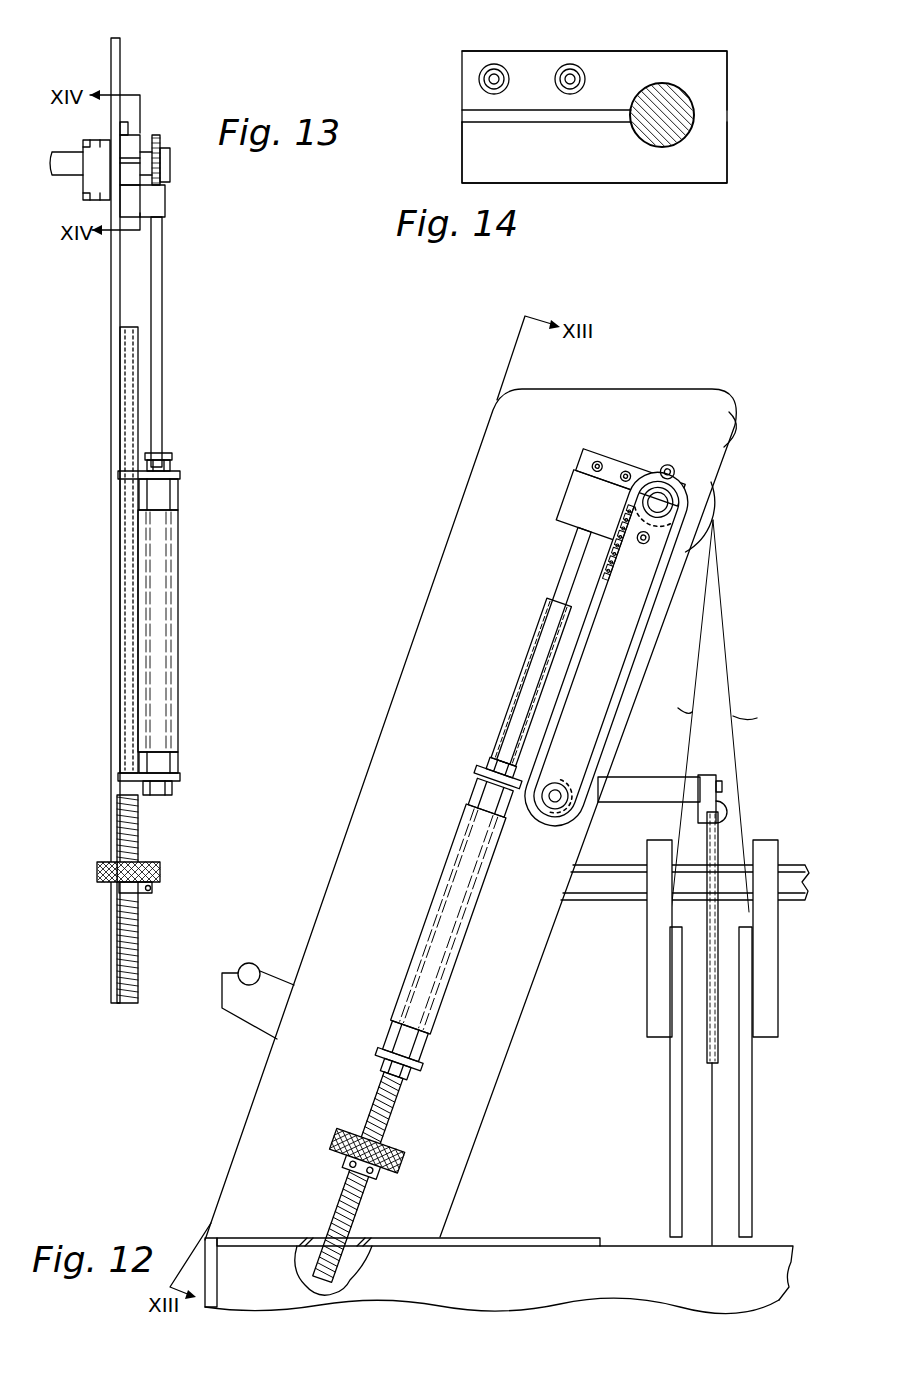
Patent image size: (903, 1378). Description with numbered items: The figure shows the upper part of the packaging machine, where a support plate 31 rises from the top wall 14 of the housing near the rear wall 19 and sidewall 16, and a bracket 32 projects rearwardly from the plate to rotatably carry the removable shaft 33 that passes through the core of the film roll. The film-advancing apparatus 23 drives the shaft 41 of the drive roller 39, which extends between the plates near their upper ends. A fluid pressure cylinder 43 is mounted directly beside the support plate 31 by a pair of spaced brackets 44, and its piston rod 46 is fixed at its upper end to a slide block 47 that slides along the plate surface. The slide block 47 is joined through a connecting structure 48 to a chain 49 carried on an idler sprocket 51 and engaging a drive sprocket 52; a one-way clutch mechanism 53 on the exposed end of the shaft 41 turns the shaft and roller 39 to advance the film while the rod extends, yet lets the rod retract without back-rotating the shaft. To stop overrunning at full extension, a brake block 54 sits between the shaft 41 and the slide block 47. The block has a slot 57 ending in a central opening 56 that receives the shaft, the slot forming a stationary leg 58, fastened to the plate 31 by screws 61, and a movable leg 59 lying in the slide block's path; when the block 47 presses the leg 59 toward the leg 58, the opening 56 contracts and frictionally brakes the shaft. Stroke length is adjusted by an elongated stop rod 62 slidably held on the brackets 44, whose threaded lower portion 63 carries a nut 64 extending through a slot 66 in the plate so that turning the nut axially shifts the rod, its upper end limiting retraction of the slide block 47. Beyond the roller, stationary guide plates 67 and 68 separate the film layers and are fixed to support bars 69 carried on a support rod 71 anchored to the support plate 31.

In FIG. 12, the top wall 14 is at (553, 1238).
In FIG. 12, the sidewall 16 is at (770, 1268).
In FIG. 12, the rear wall 19 is at (210, 1262).
In FIG. 13, the film-advancing apparatus 23 is at (180, 459).
In FIG. 13, the support plate 31 is at (116, 292).
In FIG. 12, the support plate 31 is at (480, 545).
In FIG. 12, the bracket 32 is at (263, 1020).
In FIG. 12, the removable shaft 33 is at (256, 966).
In FIG. 12, the drive roller 39 is at (710, 513).
In FIG. 13, the drive shaft 41 is at (65, 160).
In FIG. 14, the drive shaft 41 is at (688, 115).
In FIG. 12, the drive shaft 41 is at (662, 503).
In FIG. 13, the fluid pressure cylinder 43 is at (158, 627).
In FIG. 12, the fluid pressure cylinder 43 is at (443, 880).
In FIG. 13, the bracket 44 is at (180, 474).
In FIG. 12, the bracket 44 is at (480, 776).
In FIG. 13, the piston rod 46 is at (160, 297).
In FIG. 12, the piston rod 46 is at (563, 594).
In FIG. 13, the slide block 47 is at (155, 200).
In FIG. 12, the slide block 47 is at (583, 517).
In FIG. 12, the connecting structure 48 is at (627, 545).
In FIG. 12, the chain 49 is at (650, 600).
In FIG. 12, the idler sprocket 51 is at (565, 778).
In FIG. 13, the drive sprocket 52 is at (163, 150).
In FIG. 12, the drive sprocket 52 is at (657, 522).
In FIG. 13, the one-way clutch mechanism 53 is at (160, 140).
In FIG. 14, the brake block 54 is at (637, 52).
In FIG. 12, the brake block 54 is at (620, 460).
In FIG. 14, the central opening 56 is at (648, 144).
In FIG. 14, the slot 57 is at (462, 117).
In FIG. 13, the leg 58 is at (125, 147).
In FIG. 14, the leg 58 is at (527, 72).
In FIG. 13, the leg 59 is at (125, 175).
In FIG. 14, the leg 59 is at (552, 185).
In FIG. 14, the screw 61 is at (490, 75).
In FIG. 13, the stop rod 62 is at (128, 417).
In FIG. 13, the lower portion of rod 63 is at (130, 940).
In FIG. 13, the nut 64 is at (155, 868).
In FIG. 13, the slot 66 is at (98, 872).
In FIG. 12, the guide plate 67 is at (752, 1125).
In FIG. 12, the guide plate 68 is at (678, 1125).
In FIG. 12, the support bar 69 is at (655, 1003).
In FIG. 12, the support rod 71 is at (630, 888).